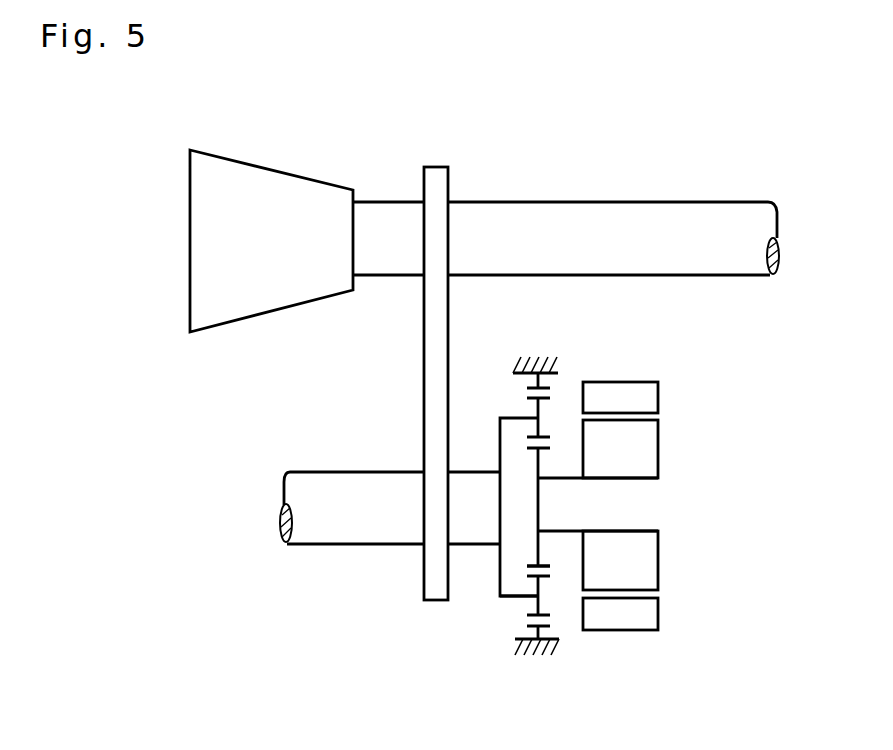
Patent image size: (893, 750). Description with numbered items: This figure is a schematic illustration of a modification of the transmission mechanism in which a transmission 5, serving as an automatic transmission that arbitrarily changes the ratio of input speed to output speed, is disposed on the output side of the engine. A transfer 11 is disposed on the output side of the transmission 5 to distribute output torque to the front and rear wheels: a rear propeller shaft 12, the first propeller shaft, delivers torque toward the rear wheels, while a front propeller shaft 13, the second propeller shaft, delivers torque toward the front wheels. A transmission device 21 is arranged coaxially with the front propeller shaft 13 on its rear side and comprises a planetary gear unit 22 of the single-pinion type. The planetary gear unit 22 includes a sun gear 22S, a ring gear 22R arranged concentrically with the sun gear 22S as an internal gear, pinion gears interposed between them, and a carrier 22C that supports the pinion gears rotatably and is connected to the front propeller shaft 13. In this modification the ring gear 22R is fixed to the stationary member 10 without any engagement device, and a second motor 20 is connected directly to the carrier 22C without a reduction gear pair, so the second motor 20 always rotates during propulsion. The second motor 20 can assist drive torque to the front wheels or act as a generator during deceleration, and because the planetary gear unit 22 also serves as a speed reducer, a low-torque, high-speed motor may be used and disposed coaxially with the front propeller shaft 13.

The transmission 5 is at (276, 178).
The stationary member 10 is at (542, 362).
The transfer 11 is at (427, 365).
The rear propeller shaft 12 is at (630, 207).
The front propeller shaft 13 is at (336, 532).
The second motor 20 is at (679, 400).
The transmission device 21 is at (493, 645).
The planetary gear unit 22 is at (583, 632).
The carrier 22C is at (500, 578).
The ring gear 22R is at (533, 622).
The sun gear 22S is at (540, 565).